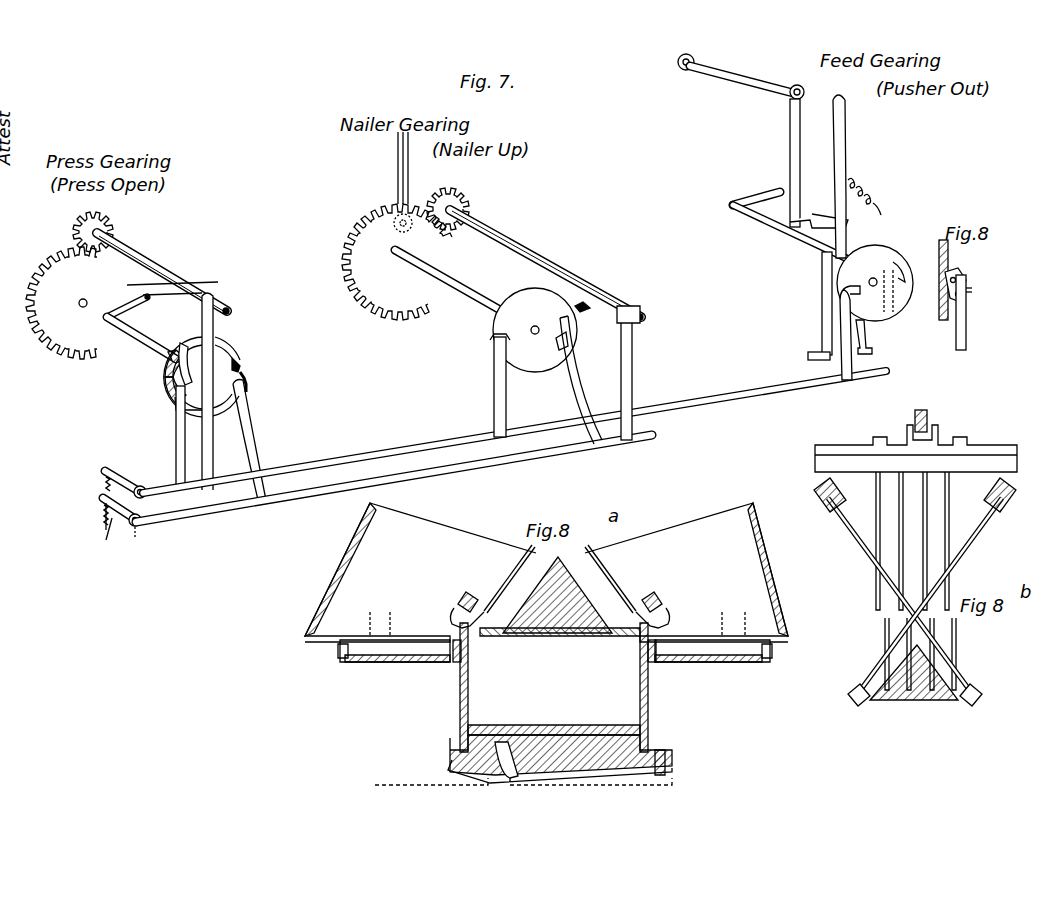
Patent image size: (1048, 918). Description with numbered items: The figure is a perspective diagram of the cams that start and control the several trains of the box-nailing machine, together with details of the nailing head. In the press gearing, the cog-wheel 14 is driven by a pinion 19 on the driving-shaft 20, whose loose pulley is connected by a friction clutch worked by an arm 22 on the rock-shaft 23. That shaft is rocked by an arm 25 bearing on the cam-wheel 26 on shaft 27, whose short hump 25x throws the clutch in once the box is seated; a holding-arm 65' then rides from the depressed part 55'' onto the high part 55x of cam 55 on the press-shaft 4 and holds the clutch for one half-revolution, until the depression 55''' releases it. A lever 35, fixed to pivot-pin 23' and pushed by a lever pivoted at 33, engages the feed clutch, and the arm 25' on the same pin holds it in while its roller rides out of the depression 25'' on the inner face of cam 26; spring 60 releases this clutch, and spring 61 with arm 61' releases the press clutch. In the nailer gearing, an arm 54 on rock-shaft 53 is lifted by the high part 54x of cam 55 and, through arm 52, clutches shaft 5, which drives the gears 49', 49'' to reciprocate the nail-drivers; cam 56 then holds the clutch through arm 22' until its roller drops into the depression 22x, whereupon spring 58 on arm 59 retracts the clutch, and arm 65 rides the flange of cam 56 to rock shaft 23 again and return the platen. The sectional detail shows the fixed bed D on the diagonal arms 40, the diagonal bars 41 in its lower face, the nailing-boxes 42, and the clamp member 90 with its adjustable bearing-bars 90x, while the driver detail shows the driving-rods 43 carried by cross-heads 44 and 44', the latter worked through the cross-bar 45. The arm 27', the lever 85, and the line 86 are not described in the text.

In FIG. 7, the press-shaft 4 is at (127, 343).
In FIG. 7, the shaft 5 is at (547, 268).
In FIG. 7, the cog-wheel 14 is at (77, 333).
In FIG. 7, the pinion 19 is at (108, 220).
In FIG. 7, the driving-shaft 20 is at (187, 292).
In FIG. 7, the arm 22 is at (232, 391).
In FIG. 7, the arm 22' is at (587, 380).
In FIG. 7, the depression 22x is at (562, 350).
In FIG. 7, the rock-shaft 23 is at (514, 432).
In FIG. 7, the pivot-pin 23' is at (790, 364).
In FIG. 7, the arm 25 is at (816, 316).
In FIG. 7, the lever-arm 25' is at (888, 338).
In FIG. 8, the lever-arm 25' is at (983, 312).
In FIG. 8, the depression 25'' is at (971, 280).
In FIG. 7, the hump 25x is at (898, 285).
In FIG. 7, the cam-wheel 26 is at (883, 248).
In FIG. 7, the shaft 27 is at (786, 235).
In FIG. 7, the feed rod arm 27' is at (751, 186).
In FIG. 7, the pivot 33 is at (790, 128).
In FIG. 7, the lever 35 is at (848, 172).
In FIG. 8A, the diagonal arms 40 is at (546, 572).
In FIG. 8A, the diagonal bars 41 is at (640, 582).
In FIG. 8A, the nailing-boxes 42 is at (481, 615).
In FIG. 8B, the nailing-boxes 42 is at (848, 692).
In FIG. 8B, the driving-rods 43 is at (924, 582).
In FIG. 8B, the cross-heads 44 is at (903, 582).
In FIG. 8B, the cross-heads 44' is at (916, 445).
In FIG. 8B, the cross-bar 45 is at (938, 403).
In FIG. 7, the gear 49' is at (465, 201).
In FIG. 7, the gear 49'' is at (429, 235).
In FIG. 7, the arm 52 is at (634, 368).
In FIG. 7, the rock-shaft 53 is at (547, 452).
In FIG. 7, the arm 54 is at (262, 450).
In FIG. 7, the high part 54x is at (165, 392).
In FIG. 7, the cam 55 is at (178, 377).
In FIG. 7, the high part 55x is at (191, 356).
In FIG. 7, the depressed part 55'' is at (154, 419).
In FIG. 7, the depression 55''' is at (261, 375).
In FIG. 7, the cam 56 is at (508, 326).
In FIG. 7, the spring 58 is at (102, 522).
In FIG. 7, the arm 59 is at (118, 530).
In FIG. 7, the spring 60 is at (878, 190).
In FIG. 7, the spring 61 is at (90, 474).
In FIG. 7, the arm 61' is at (143, 474).
In FIG. 7, the arm 65 is at (476, 385).
In FIG. 7, the holding-arm 65' is at (151, 436).
In FIG. 8A, the nail box 85 is at (522, 740).
In FIG. 8A, the base line 86 is at (410, 768).
In FIG. 8A, the clamp member 90 is at (418, 648).
In FIG. 8A, the adjustable bearing-bars 90x is at (667, 700).
In FIG. 8A, the bed D is at (566, 615).
In FIG. 8B, the bed D is at (918, 690).